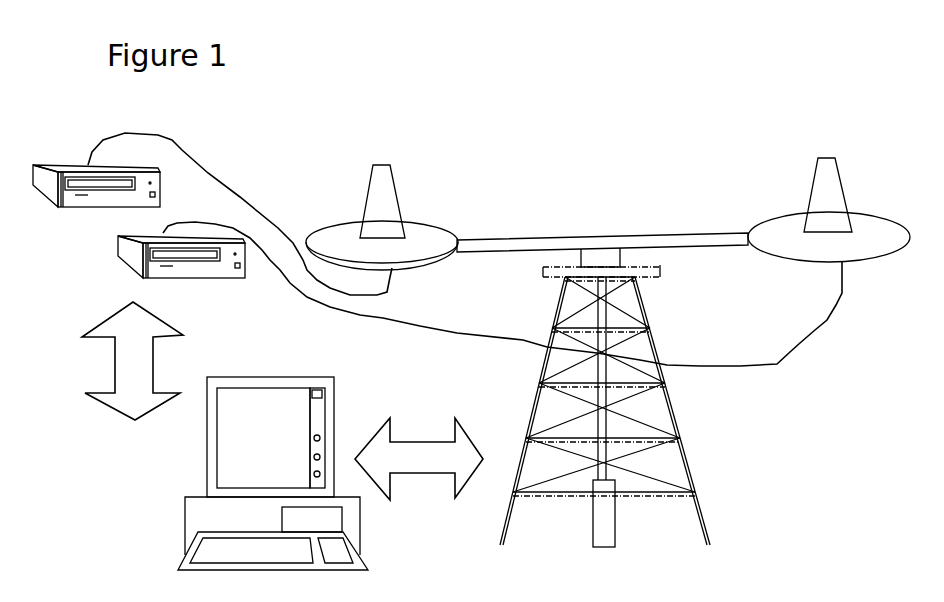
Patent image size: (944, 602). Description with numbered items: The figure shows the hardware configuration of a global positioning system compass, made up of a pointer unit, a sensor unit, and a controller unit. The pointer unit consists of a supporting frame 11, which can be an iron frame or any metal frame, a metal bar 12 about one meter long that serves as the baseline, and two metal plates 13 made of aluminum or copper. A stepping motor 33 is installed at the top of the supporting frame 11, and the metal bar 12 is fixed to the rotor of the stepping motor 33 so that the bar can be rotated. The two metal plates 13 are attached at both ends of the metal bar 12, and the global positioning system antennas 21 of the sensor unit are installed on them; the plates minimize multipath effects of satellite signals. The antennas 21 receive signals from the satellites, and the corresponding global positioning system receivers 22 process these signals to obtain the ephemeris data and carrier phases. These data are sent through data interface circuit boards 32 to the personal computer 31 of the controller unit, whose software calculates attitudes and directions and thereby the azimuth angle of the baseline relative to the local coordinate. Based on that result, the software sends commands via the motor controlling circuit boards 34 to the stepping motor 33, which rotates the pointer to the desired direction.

The supporting frame 11 is at (626, 412).
The metal bar 12 is at (602, 230).
The metal plates 13 is at (608, 225).
The global positioning system antennas 21 is at (617, 180).
The global positioning system receivers 22 is at (139, 247).
The personal computer 31 is at (260, 473).
The data interface circuit boards 32 is at (144, 361).
The stepping motor 33 is at (626, 272).
The motor controlling circuit boards 34 is at (419, 448).